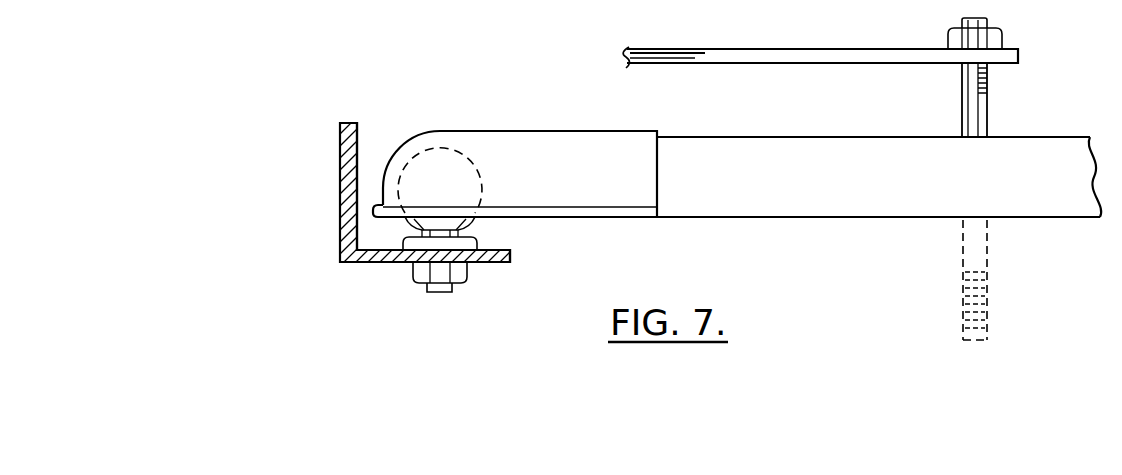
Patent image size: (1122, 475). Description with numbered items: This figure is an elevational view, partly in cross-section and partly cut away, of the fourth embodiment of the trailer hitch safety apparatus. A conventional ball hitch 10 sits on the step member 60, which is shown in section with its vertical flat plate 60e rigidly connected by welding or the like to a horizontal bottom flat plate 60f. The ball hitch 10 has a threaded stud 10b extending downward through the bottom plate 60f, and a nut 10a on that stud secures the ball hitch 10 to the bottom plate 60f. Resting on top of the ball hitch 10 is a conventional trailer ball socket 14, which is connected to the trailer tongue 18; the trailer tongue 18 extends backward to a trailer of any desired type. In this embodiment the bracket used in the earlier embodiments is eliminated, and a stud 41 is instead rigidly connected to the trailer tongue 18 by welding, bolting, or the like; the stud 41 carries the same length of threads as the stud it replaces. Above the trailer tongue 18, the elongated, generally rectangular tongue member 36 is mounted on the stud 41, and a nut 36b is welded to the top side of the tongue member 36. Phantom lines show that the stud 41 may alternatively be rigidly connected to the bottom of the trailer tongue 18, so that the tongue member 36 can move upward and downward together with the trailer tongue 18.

The ball hitch 10 is at (473, 180).
The nut 10a is at (468, 272).
The threaded stud 10b is at (440, 293).
The trailer ball socket 14 is at (432, 120).
The trailer tongue 18 is at (770, 152).
The tongue member 36 is at (775, 40).
The nut 36b is at (1000, 42).
The stud 41 is at (988, 115).
The step member 60 is at (420, 213).
The vertical flat plate 60e is at (340, 150).
The horizontal bottom flat plate 60f is at (375, 263).